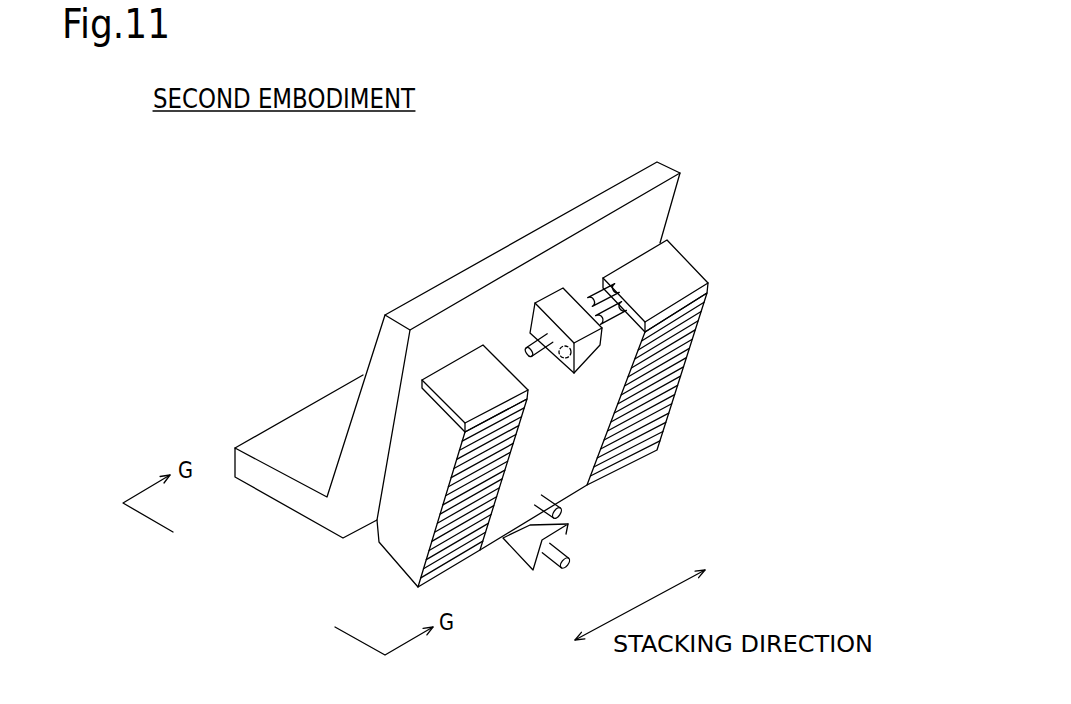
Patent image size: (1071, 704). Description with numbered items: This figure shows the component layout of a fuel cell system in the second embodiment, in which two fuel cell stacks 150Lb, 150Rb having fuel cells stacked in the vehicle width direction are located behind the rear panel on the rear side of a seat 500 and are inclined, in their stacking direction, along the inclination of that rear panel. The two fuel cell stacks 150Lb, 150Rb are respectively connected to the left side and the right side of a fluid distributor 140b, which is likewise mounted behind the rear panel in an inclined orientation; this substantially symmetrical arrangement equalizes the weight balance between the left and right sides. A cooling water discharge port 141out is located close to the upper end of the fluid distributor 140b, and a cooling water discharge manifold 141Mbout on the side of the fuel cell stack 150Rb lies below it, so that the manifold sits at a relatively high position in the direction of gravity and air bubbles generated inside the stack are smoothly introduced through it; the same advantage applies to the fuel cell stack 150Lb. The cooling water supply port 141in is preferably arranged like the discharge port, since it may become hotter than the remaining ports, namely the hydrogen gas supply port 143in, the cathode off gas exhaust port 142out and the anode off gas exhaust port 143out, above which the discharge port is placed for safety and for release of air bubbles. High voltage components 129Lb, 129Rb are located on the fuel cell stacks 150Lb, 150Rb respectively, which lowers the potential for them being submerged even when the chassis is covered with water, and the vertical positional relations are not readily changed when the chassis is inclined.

The seat 500 is at (267, 428).
The fuel cell stack 150Lb is at (397, 440).
The fuel cell stack 150Rb is at (708, 359).
The high voltage component 129Lb is at (460, 358).
The high voltage component 129Rb is at (704, 286).
The fluid distributor 140b is at (536, 303).
The cooling water discharge port 141out is at (638, 252).
The cooling water supply port 141in is at (648, 273).
The cooling water discharge manifold 141Mbout is at (571, 355).
The hydrogen gas supply port 143in is at (524, 351).
The cathode off gas exhaust port 142out is at (569, 514).
The anode off gas exhaust port 143out is at (572, 562).